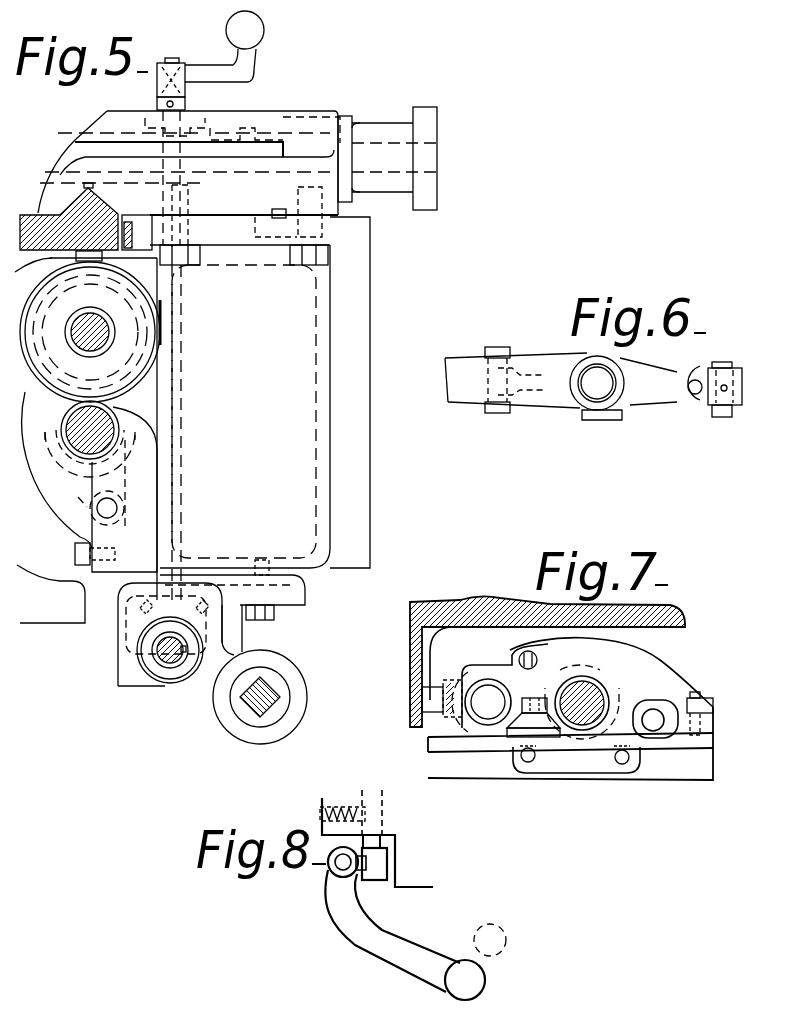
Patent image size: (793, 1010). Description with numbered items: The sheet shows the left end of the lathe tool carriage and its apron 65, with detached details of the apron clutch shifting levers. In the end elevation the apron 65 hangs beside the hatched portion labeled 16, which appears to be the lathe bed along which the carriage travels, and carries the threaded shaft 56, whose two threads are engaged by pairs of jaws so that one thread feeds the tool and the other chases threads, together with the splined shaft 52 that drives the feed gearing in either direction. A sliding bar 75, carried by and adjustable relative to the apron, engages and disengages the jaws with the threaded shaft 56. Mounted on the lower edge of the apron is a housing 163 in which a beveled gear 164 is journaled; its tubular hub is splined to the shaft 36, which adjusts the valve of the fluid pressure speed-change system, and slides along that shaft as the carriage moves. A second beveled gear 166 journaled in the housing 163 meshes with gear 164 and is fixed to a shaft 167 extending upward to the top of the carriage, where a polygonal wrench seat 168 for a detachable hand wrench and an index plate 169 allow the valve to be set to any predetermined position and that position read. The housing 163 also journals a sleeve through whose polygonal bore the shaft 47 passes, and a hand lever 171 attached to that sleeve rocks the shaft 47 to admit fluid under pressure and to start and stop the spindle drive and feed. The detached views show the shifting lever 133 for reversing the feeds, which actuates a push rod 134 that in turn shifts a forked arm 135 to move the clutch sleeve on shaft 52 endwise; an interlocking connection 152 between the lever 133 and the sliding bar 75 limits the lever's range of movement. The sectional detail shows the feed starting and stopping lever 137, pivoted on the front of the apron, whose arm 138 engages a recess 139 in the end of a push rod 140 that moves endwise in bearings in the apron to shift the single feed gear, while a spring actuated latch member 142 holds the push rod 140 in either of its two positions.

In FIG. 5, the machine bed 16 is at (70, 205).
In FIG. 5, the shaft 36 is at (163, 665).
In FIG. 5, the shaft 47 is at (248, 688).
In FIG. 5, the splined shaft 52 is at (78, 424).
In FIG. 7, the splined shaft 52 is at (581, 722).
In FIG. 5, the threaded shaft 56 is at (92, 345).
In FIG. 7, the threaded shaft 56 is at (485, 690).
In FIG. 5, the apron 65 is at (330, 490).
In FIG. 8, the apron 65 is at (316, 822).
In FIG. 5, the sliding bar 75 is at (142, 228).
In FIG. 6, the sliding bar 75 is at (505, 351).
In FIG. 7, the sliding bar 75 is at (422, 700).
In FIG. 6, the shifting lever 133 is at (645, 398).
In FIG. 7, the shifting lever 133 is at (458, 760).
In FIG. 5, the push rod 134 is at (100, 515).
In FIG. 6, the push rod 134 is at (730, 412).
In FIG. 7, the push rod 134 is at (656, 730).
In FIG. 5, the forked arm 135 is at (66, 488).
In FIG. 7, the forked arm 135 is at (614, 674).
In FIG. 8, the shifting lever 137 is at (388, 936).
In FIG. 8, the arm 138 is at (366, 880).
In FIG. 8, the recess 139 is at (388, 863).
In FIG. 8, the push rod 140 is at (386, 818).
In FIG. 8, the spring actuated latch member 142 is at (350, 802).
In FIG. 6, the interlocking connection 152 is at (499, 392).
In FIG. 7, the interlocking connection 152 is at (441, 727).
In FIG. 5, the housing 163 is at (118, 656).
In FIG. 5, the beveled gear 164 is at (146, 664).
In FIG. 5, the beveled gear 166 is at (138, 622).
In FIG. 5, the shaft 167 is at (184, 520).
In FIG. 5, the polygonal wrench seat 168 is at (175, 52).
In FIG. 5, the index plate 169 is at (193, 120).
In FIG. 6, the hand lever 171 is at (446, 384).